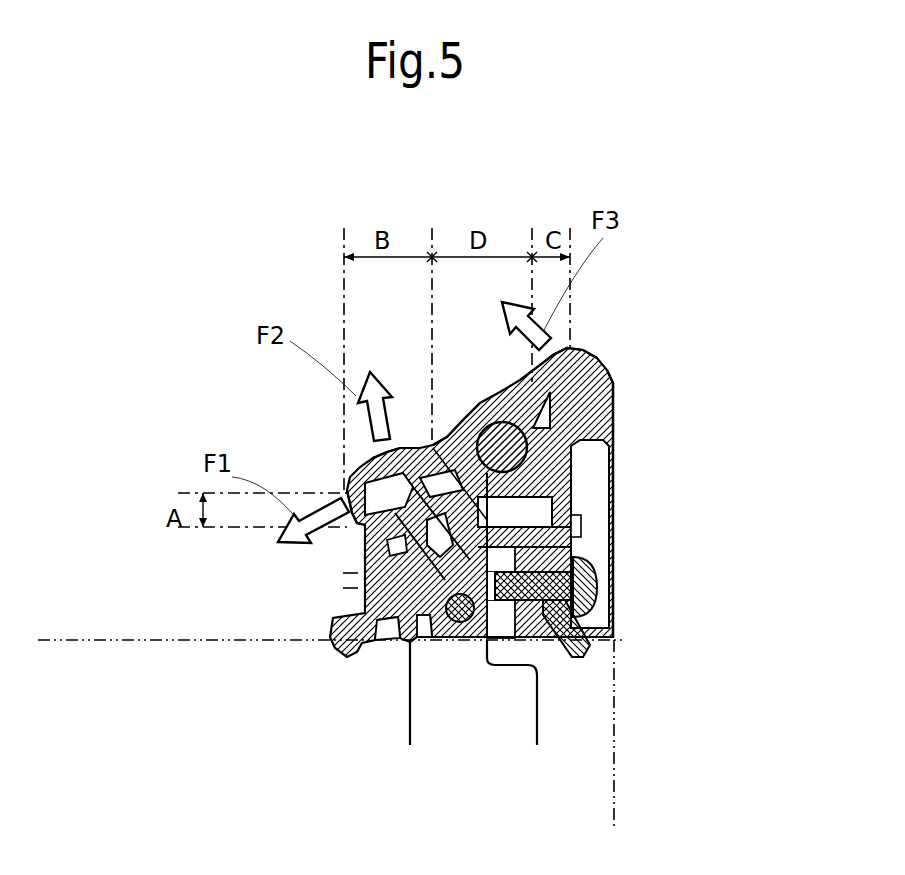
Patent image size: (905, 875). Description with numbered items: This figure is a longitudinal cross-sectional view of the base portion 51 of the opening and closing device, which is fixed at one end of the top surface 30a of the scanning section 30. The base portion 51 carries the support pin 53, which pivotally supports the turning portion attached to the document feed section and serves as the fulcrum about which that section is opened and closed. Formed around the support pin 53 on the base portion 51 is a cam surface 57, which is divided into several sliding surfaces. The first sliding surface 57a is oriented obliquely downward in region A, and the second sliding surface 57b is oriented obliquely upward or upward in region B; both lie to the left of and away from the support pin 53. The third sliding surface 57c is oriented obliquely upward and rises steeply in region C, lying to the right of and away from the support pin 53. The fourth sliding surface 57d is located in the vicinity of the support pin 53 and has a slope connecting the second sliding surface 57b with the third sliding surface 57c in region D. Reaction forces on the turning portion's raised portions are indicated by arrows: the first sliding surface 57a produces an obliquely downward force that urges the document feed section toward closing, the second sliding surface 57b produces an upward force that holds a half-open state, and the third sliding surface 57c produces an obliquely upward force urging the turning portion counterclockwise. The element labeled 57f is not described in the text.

The cam surface 57 is at (500, 381).
The first sliding surface 57a is at (343, 527).
The second sliding surface 57b is at (385, 455).
The third sliding surface 57c is at (553, 353).
The fourth sliding surface 57d is at (455, 425).
The bracket tip portion 57f is at (346, 493).
The base portion 51 is at (662, 318).
The support pin 53 is at (613, 413).
The scanning section 30 is at (616, 713).
The top surface 30a is at (135, 645).